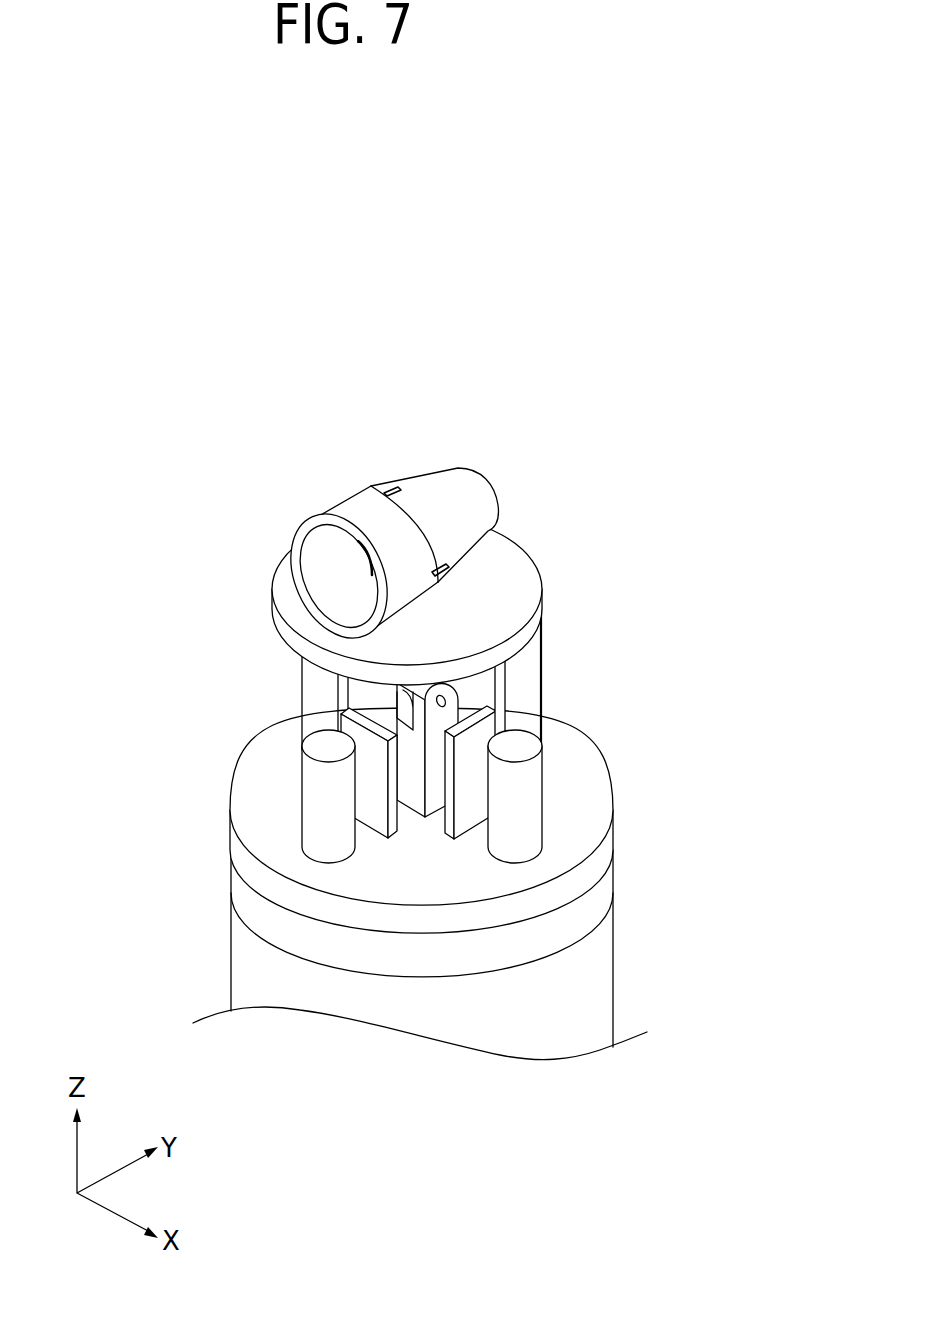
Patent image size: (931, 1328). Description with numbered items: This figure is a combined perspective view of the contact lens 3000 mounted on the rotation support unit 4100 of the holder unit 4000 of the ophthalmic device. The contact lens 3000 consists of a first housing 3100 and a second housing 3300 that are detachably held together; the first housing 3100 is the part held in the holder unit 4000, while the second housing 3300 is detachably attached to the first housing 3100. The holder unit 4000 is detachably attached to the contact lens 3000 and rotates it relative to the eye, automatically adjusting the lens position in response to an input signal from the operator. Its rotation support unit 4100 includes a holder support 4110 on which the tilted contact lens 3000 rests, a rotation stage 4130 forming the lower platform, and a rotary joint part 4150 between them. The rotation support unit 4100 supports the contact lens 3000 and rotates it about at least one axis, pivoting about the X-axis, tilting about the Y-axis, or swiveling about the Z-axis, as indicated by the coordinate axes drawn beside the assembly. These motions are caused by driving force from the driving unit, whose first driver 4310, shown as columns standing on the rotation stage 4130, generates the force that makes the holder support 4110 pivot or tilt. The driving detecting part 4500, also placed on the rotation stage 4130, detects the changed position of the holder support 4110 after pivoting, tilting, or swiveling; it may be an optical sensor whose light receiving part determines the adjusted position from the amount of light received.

The contact lens 3000 is at (385, 498).
The first housing 3100 is at (455, 392).
The second housing 3300 is at (422, 485).
The holder unit 4000 is at (670, 991).
The rotation support unit 4100 is at (461, 723).
The holder support 4110 is at (498, 599).
The rotation stage 4130 is at (585, 806).
The rotary joint part 4150 is at (455, 700).
The first driver 4310 is at (311, 794).
The driving detecting part 4500 is at (350, 727).